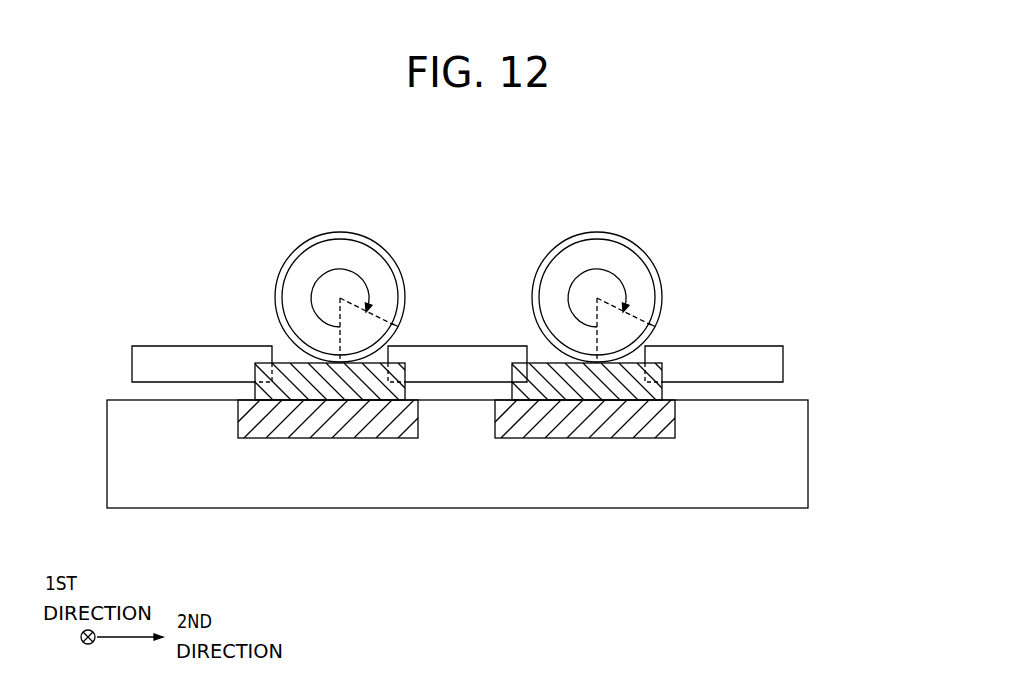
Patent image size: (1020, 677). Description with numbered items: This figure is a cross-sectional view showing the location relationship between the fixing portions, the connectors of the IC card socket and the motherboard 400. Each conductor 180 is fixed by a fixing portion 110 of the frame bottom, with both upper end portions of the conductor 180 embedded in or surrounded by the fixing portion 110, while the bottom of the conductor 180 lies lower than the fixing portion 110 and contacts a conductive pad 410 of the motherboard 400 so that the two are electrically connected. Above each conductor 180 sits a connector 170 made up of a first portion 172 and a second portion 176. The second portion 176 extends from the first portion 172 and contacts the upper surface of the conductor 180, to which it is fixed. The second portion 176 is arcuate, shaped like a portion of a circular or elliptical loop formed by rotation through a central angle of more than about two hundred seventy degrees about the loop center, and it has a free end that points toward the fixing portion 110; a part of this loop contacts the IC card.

The fixing portion 110 is at (190, 365).
The connector 170 is at (440, 173).
The first portion 172 is at (404, 358).
The second portion 176 is at (338, 233).
The conductor 180 is at (285, 390).
The motherboard 400 is at (333, 482).
The conductive pad 410 is at (383, 412).